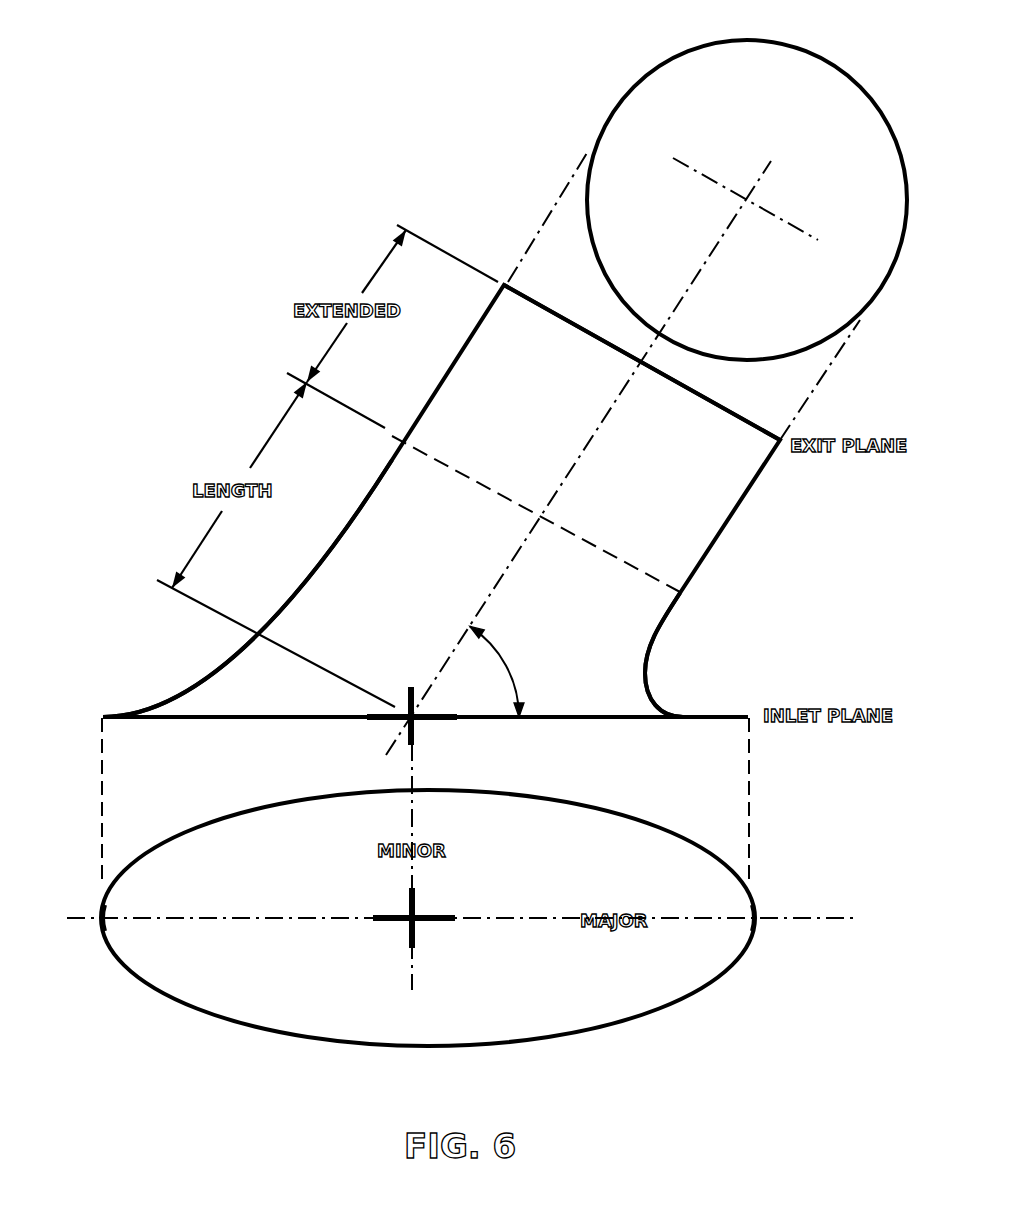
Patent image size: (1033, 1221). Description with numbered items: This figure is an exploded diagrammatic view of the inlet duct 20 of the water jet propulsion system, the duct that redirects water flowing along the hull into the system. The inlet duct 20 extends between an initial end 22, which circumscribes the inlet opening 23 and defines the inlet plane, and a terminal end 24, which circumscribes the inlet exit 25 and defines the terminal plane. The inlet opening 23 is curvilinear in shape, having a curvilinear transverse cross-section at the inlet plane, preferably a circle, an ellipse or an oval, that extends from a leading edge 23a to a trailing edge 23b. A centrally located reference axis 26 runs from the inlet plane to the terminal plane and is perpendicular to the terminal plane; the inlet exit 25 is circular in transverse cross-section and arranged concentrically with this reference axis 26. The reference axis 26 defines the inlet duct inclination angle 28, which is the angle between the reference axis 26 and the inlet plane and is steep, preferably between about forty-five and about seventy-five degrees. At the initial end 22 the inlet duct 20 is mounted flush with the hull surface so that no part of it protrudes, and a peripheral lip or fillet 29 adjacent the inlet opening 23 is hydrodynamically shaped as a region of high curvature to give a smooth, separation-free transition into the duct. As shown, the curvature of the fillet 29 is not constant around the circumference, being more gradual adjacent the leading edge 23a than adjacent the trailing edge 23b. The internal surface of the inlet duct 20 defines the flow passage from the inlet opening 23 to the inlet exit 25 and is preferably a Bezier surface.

The inlet duct 20 is at (416, 571).
The initial end 22 is at (223, 718).
The inlet opening 23 is at (227, 980).
The leading edge 23a is at (102, 918).
The trailing edge 23b is at (757, 922).
The terminal end 24 is at (542, 302).
The inlet exit 25 is at (657, 123).
The reference axis 26 is at (587, 450).
The inlet duct inclination angle 28 is at (510, 668).
The fillet 29 is at (180, 664).